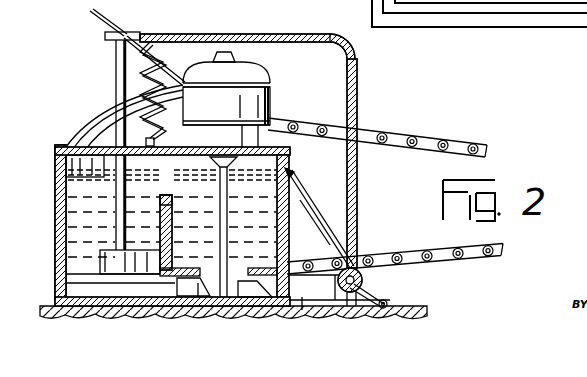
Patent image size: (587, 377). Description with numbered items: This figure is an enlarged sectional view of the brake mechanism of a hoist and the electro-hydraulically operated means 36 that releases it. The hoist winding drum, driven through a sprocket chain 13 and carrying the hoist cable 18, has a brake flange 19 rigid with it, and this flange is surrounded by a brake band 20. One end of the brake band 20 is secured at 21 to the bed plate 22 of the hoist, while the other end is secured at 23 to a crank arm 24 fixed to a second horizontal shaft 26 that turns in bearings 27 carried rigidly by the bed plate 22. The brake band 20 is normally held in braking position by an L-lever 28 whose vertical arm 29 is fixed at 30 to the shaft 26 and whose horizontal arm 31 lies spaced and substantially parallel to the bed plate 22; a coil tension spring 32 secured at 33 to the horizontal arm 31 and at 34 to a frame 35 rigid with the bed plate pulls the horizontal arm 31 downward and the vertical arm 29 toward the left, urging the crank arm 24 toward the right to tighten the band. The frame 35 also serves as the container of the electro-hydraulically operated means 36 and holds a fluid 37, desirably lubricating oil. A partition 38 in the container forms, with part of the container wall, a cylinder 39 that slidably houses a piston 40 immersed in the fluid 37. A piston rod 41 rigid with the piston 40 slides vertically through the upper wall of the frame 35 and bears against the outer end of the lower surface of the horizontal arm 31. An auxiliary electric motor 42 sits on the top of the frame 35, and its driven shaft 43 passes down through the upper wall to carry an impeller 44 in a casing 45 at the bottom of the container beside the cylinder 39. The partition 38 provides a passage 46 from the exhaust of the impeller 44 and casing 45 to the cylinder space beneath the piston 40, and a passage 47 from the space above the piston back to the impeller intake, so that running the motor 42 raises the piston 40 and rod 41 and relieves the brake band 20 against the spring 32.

The sprocket chain 13 is at (460, 145).
The hoist cable 18 is at (92, 21).
The brake flange 19 is at (288, 203).
The brake band 20 is at (295, 187).
The securing point of brake band to bed plate 21 is at (388, 305).
The bed plate 22 is at (88, 308).
The securing point of brake band to crank arm 23 is at (350, 306).
The crank arm 24 is at (375, 308).
The second horizontal shaft 26 is at (363, 277).
The bearings 27 is at (337, 287).
The L-lever 28 is at (355, 47).
The vertical arm 29 is at (353, 192).
The fixing point of vertical arm to shaft 30 is at (368, 283).
The horizontal arm 31 is at (248, 38).
The coil tension spring 32 is at (160, 60).
The spring attachment to horizontal arm 33 is at (167, 35).
The spring attachment to frame 34 is at (157, 142).
The frame 35 is at (70, 128).
The electro-hydraulically operated means 36 is at (82, 85).
The fluid 37 is at (72, 228).
The partition 38 is at (172, 228).
The cylinder 39 is at (172, 207).
The piston 40 is at (162, 237).
The piston rod 41 is at (108, 48).
The auxiliary electric motor 42 is at (271, 103).
The driven shaft 43 is at (230, 225).
The impeller 44 is at (198, 297).
The casing 45 is at (262, 270).
The passage 46 is at (173, 283).
The passage 47 is at (180, 185).